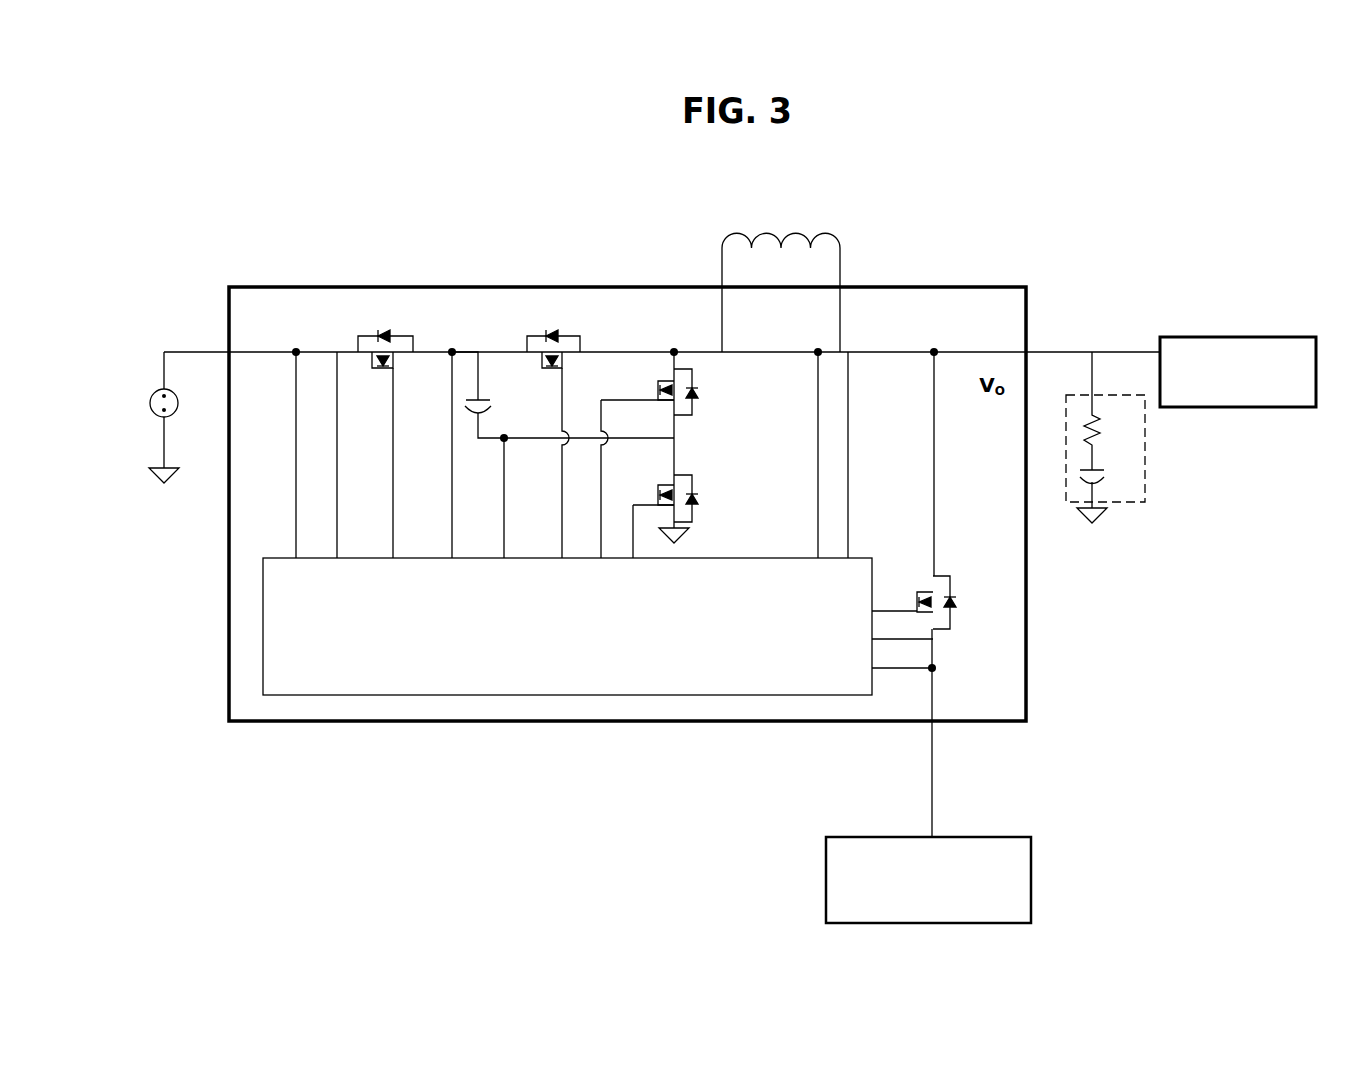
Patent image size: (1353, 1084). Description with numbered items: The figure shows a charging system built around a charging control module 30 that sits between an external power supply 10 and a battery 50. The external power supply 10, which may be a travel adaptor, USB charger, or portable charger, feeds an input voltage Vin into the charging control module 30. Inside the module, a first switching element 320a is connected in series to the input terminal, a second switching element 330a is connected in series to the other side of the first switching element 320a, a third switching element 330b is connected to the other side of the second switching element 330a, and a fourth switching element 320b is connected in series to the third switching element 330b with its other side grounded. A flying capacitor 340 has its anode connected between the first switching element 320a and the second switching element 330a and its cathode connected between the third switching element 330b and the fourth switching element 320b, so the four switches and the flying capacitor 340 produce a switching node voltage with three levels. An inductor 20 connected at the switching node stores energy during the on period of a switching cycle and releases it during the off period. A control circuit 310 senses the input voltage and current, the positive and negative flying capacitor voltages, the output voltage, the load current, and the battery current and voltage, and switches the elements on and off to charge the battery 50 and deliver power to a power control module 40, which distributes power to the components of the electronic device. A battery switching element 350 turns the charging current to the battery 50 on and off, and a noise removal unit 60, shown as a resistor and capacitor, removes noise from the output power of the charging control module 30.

The external power supply 10 is at (151, 394).
The inductor 20 is at (813, 244).
The charging control module 30 is at (964, 287).
The power control module 40 is at (1283, 337).
The battery 50 is at (1031, 882).
The noise removal unit 60 is at (1145, 488).
The control circuit 310 is at (263, 643).
The first switching element 320a is at (381, 335).
The fourth switching element 320b is at (692, 522).
The second switching element 330a is at (571, 335).
The third switching element 330b is at (657, 382).
The flying capacitor 340 is at (466, 404).
The battery switching element 350 is at (950, 626).